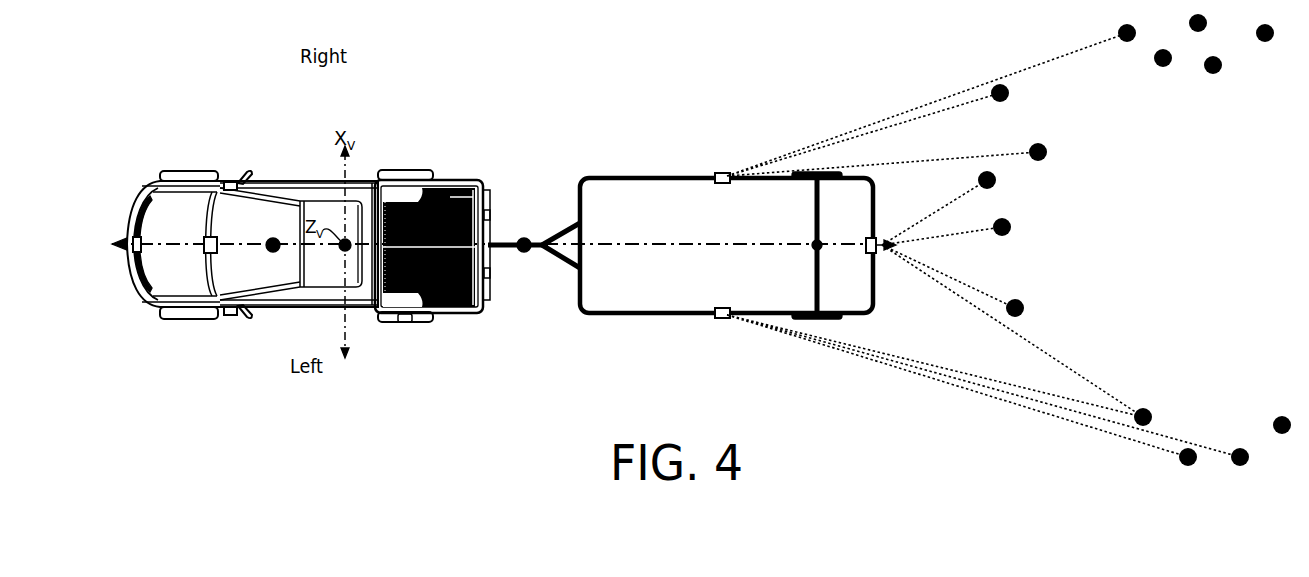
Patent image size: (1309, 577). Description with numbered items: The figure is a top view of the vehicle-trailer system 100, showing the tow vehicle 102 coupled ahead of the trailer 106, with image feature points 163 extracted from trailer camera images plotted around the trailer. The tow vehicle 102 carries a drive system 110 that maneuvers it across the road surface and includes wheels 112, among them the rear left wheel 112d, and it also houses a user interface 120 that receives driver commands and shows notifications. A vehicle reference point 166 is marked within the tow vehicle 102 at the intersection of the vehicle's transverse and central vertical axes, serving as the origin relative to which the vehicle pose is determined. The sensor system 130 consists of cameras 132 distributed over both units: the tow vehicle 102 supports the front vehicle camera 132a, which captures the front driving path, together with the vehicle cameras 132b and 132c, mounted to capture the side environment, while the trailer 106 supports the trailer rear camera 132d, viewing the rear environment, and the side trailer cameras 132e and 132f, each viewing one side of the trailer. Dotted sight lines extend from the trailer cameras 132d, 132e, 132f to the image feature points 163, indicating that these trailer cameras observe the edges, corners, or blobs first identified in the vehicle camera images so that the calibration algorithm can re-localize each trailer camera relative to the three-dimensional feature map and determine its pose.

The vehicle-trailer system 100 is at (499, 59).
The tow vehicle 102 is at (168, 165).
The trailer 106 is at (713, 159).
The drive system 110 is at (404, 345).
The wheel 112 is at (404, 345).
The rear left wheel 112d is at (405, 322).
The user interface 120 is at (234, 229).
The sensor system 130 is at (490, 248).
The camera 132 is at (467, 251).
The front vehicle camera 132a is at (127, 238).
The vehicle camera 132b is at (236, 178).
The side vehicle camera 132c is at (233, 317).
The trailer rear camera 132d is at (867, 247).
The side trailer camera 132e is at (722, 184).
The side trailer camera 132f is at (717, 317).
The image feature point 163 is at (1127, 42).
The vehicle reference point 166 is at (268, 250).